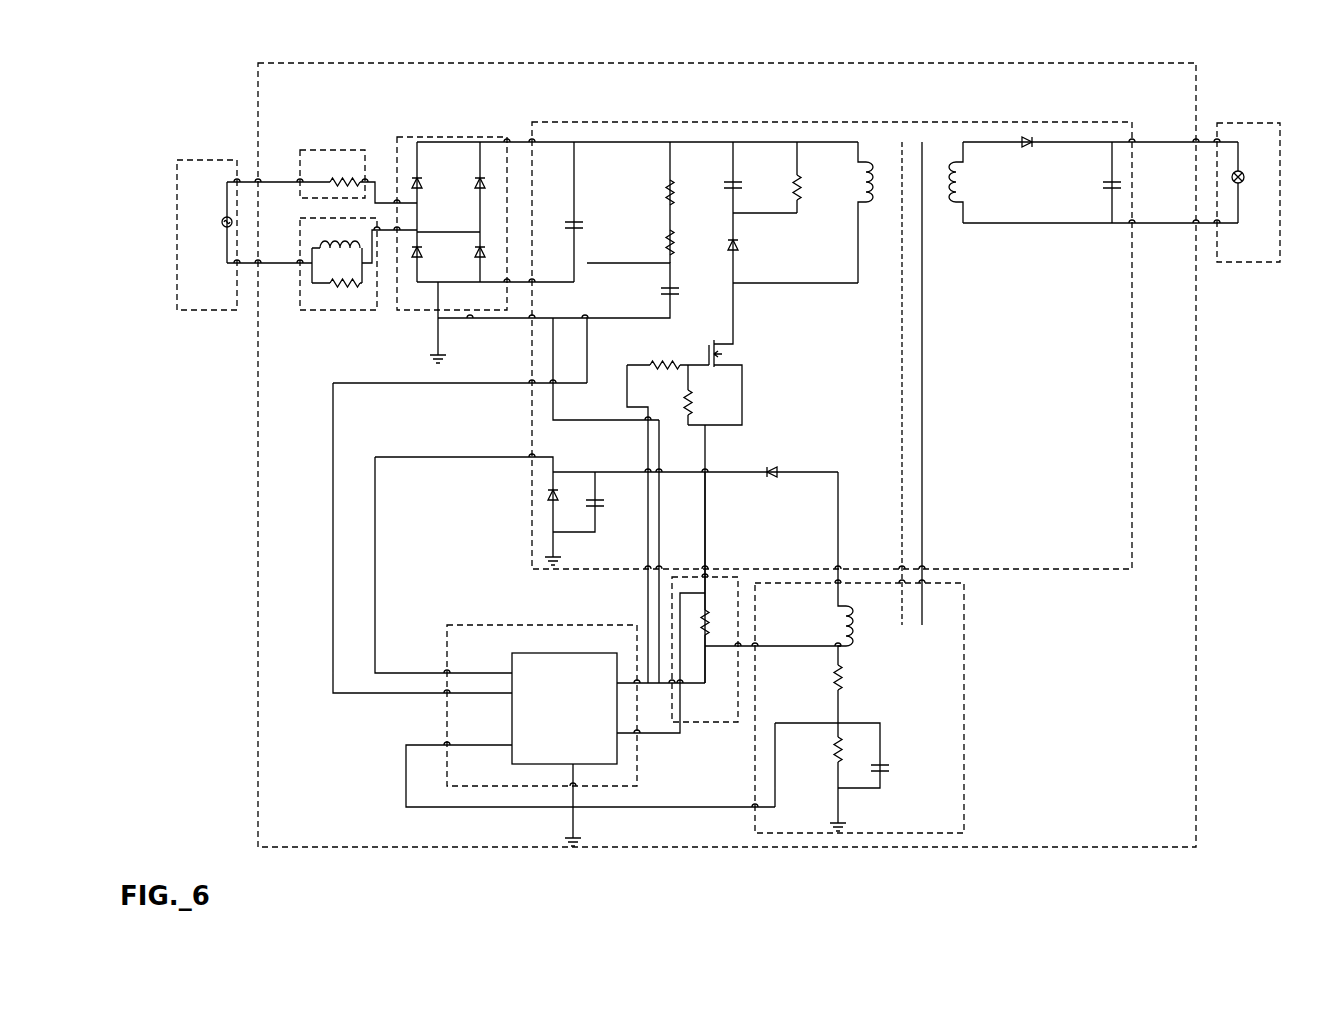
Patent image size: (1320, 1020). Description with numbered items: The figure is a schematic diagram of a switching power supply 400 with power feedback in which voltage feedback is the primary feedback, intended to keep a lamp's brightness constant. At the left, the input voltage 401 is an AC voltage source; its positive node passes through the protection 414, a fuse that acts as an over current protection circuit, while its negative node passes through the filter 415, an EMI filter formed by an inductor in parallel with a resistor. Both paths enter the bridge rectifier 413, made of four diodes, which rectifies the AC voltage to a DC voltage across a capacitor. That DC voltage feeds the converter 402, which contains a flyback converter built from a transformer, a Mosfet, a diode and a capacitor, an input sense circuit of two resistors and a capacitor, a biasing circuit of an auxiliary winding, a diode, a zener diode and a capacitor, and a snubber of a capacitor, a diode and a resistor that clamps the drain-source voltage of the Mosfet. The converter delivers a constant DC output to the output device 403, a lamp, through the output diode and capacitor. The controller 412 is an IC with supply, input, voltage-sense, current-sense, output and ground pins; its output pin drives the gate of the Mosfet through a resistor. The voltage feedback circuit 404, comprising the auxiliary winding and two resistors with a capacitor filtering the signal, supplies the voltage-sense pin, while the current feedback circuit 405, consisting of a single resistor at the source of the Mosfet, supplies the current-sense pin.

The switching power supply 400 is at (1196, 525).
The input voltage 401 is at (177, 202).
The converter 402 is at (616, 122).
The output device 403 is at (1238, 123).
The voltage feedback circuit 404 is at (964, 686).
The current feedback circuit 405 is at (712, 722).
The controller 412 is at (447, 722).
The bridge rectifier 413 is at (470, 321).
The protection 414 is at (338, 150).
The filter 415 is at (363, 312).